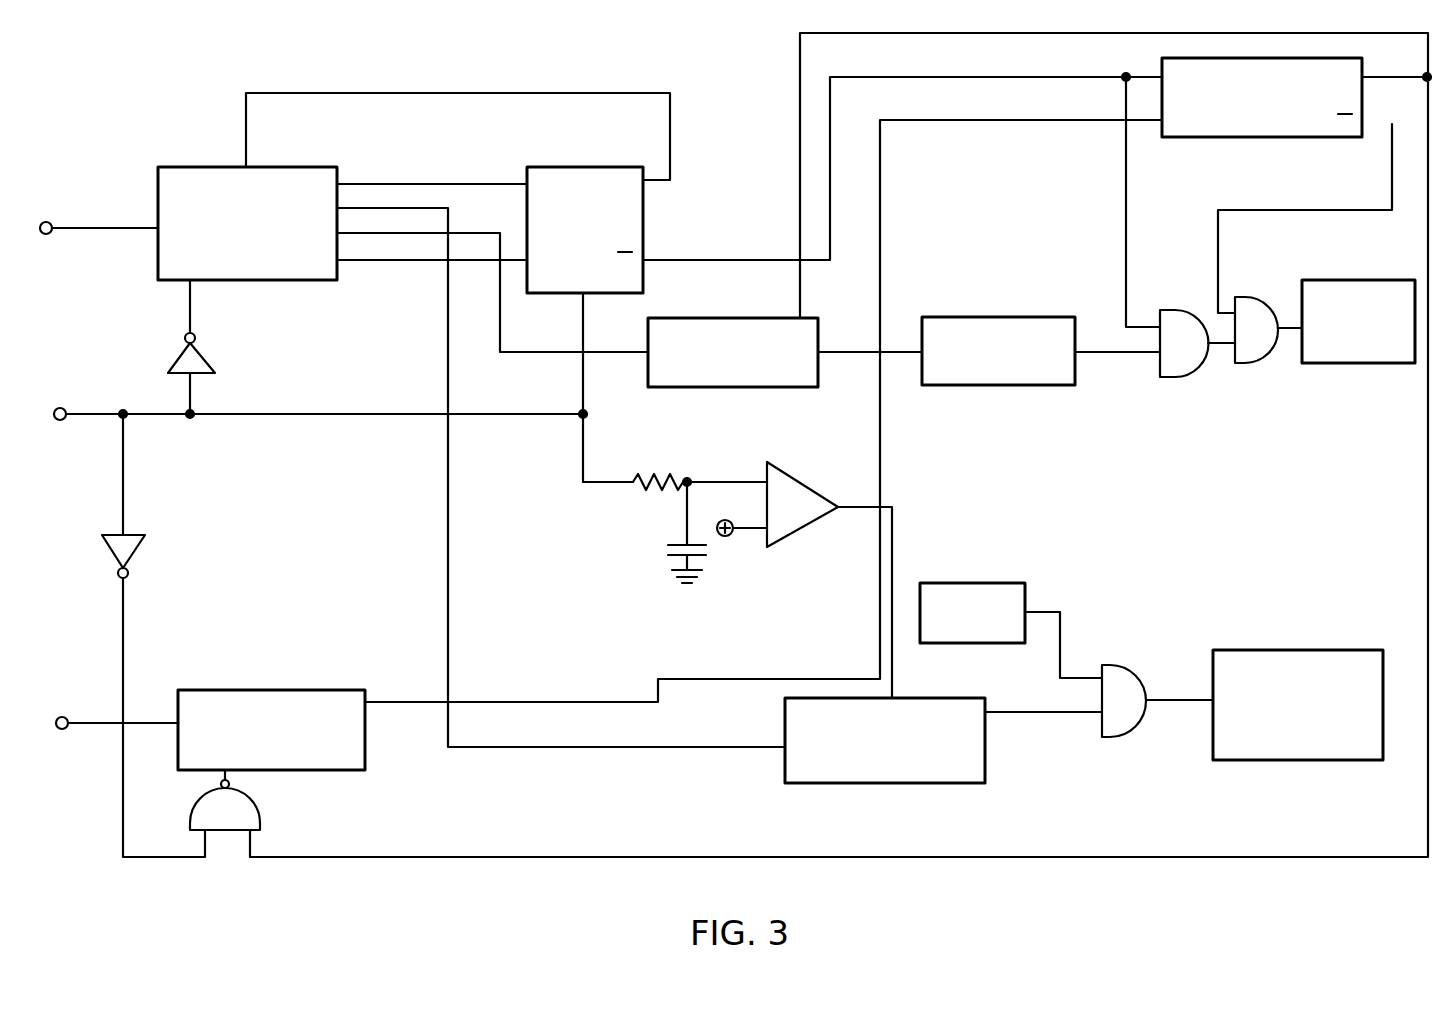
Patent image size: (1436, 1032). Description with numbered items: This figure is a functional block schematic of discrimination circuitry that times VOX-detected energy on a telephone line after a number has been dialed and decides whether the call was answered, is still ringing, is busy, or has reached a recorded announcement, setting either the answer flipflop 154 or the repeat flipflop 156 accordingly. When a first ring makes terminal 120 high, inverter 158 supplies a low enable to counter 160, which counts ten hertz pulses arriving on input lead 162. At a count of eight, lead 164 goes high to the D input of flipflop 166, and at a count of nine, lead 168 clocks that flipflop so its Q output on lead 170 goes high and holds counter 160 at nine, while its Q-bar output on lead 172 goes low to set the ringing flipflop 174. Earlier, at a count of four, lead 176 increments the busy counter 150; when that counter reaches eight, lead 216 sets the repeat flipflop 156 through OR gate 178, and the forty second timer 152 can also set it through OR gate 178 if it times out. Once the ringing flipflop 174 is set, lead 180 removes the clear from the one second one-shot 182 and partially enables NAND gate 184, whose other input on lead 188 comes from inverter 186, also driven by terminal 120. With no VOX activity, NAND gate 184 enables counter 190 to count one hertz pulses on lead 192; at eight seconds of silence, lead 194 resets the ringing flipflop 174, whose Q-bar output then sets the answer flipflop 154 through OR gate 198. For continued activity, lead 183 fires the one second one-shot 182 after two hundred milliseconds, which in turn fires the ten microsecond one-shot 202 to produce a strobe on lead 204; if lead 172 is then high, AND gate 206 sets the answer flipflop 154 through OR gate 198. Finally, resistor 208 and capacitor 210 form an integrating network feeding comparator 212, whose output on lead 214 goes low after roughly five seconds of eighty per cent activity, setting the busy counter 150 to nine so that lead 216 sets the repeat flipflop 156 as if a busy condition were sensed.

The terminal 120 is at (66, 408).
The busy counter 150 is at (915, 783).
The 40 second timer 152 is at (958, 583).
The answer flipflop 154 is at (1378, 256).
The repeat flipflop 156 is at (1268, 650).
The inverter 158 is at (203, 357).
The counter 160 is at (201, 167).
The input lead 162 is at (113, 229).
The lead 164 is at (450, 184).
The flipflop 166 is at (567, 167).
The lead 168 is at (418, 267).
The lead 170 is at (590, 93).
The lead 172 is at (679, 260).
The ringing flipflop 174 is at (1250, 58).
The lead 176 is at (561, 467).
The OR gate 178 is at (1115, 738).
The lead 180 is at (1408, 50).
The one second one-shot 182 is at (688, 318).
The lead 183 is at (570, 352).
The NAND gate 184 is at (262, 818).
The inverter 186 is at (145, 545).
The lead 188 is at (125, 657).
The counter 190 is at (240, 690).
The lead 192 is at (100, 726).
The lead 194 is at (508, 702).
The OR gate 198 is at (1278, 268).
The 10 microsecond one-shot 202 is at (1040, 317).
The lead 204 is at (1143, 355).
The AND gate 206 is at (1192, 378).
The resistor 208 is at (640, 480).
The capacitor 210 is at (668, 552).
The comparator 212 is at (800, 480).
The lead 214 is at (898, 522).
The lead 216 is at (1060, 714).